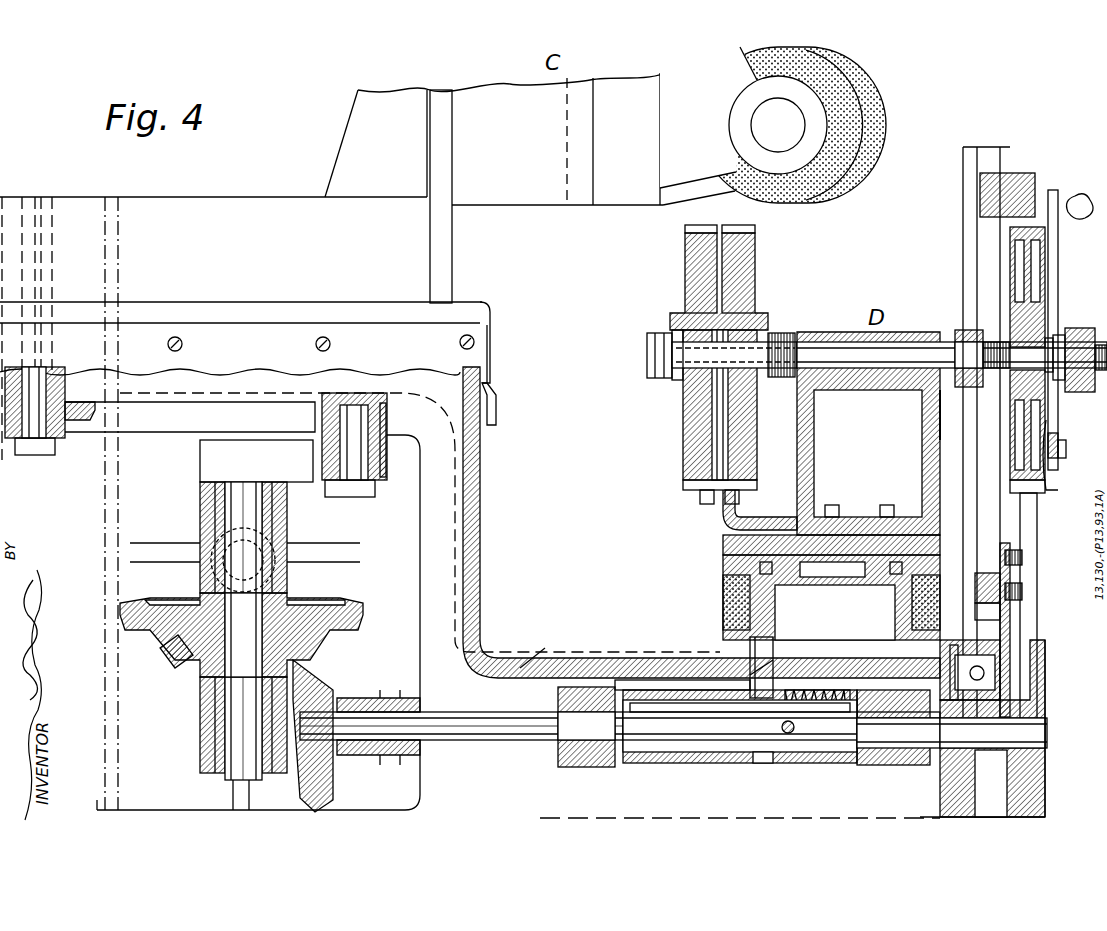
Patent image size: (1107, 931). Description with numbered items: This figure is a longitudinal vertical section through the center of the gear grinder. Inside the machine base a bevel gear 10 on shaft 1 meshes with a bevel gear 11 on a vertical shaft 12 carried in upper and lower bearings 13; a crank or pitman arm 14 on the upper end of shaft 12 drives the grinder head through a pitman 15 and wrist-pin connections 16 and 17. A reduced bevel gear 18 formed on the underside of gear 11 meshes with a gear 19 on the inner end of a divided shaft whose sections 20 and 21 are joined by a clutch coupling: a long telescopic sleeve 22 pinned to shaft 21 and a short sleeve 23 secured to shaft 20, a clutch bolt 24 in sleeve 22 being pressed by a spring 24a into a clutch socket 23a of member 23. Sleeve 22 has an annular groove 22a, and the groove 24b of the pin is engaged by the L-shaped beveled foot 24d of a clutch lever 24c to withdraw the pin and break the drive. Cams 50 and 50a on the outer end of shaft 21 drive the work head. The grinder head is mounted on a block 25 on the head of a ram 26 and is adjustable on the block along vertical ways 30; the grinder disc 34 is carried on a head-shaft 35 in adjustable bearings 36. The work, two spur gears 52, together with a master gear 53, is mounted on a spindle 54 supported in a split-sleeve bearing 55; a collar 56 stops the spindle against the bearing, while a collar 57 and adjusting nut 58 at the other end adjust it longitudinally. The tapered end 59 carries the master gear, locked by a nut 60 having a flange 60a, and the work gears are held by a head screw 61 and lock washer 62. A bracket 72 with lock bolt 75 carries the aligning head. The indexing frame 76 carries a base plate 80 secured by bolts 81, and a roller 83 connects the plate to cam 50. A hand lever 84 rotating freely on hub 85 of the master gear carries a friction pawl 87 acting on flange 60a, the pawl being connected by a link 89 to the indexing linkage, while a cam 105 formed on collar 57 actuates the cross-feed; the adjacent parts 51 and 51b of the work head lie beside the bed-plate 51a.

The shaft 1 is at (200, 578).
The bevel gear 10 is at (200, 535).
The bevel gear 11 is at (170, 640).
The vertical shaft 12 is at (235, 713).
The upper and lower bearings 13 is at (212, 492).
The crank or pitman arm 14 is at (215, 455).
The pitman 15 is at (130, 432).
The pitman wrist-pin connection 16 is at (370, 483).
The pitman wrist-pin connection 17 is at (30, 440).
The reduced bevel gear 18 is at (178, 660).
The gear 19 is at (325, 670).
The shaft section 20 is at (512, 740).
The shaft section 21 is at (900, 755).
The telescopic sleeve 22 is at (698, 763).
The annular groove 22a is at (760, 763).
The short sleeve 23 is at (572, 767).
The clutch socket 23a is at (625, 680).
The clutch bolt 24 is at (690, 712).
The spring 24a is at (815, 715).
The groove 24b is at (800, 690).
The clutch lever 24c is at (762, 650).
The L-shaped beveled foot 24d is at (770, 665).
The mounting block 25 is at (500, 197).
The ram 26 is at (232, 197).
The vertical ways 30 is at (578, 205).
The grinder disc 34 is at (797, 124).
The head-shaft 35 is at (800, 125).
The adjustable bearings 36 is at (805, 94).
The cam 50 is at (960, 780).
The cam 50a is at (1040, 762).
The slide 51 is at (728, 584).
The bed-plate 51a is at (735, 545).
The guide 51b is at (765, 565).
The spur gears 52 is at (690, 262).
The master gear 53 is at (1040, 232).
The arbor or spindle 54 is at (895, 375).
The split-sleeve adjustable bearing 55 is at (827, 332).
The collar 56 is at (782, 333).
The collar 57 is at (960, 330).
The spindle adjusting nut 58 is at (990, 342).
The tapered end 59 is at (1060, 338).
The lock nut 60 is at (1080, 392).
The flange 60a is at (1050, 340).
The head screw 61 is at (650, 350).
The lock washer 62 is at (670, 335).
The bracket 72 is at (725, 508).
The lock bolt 75 is at (700, 470).
The indexing frame 76 is at (683, 410).
The base plate 80 is at (978, 610).
The bolts 81 is at (1022, 592).
The roller 83 is at (962, 655).
The hand lever 84 is at (1055, 255).
The hub 85 is at (1058, 445).
The friction pawl 87 is at (1050, 488).
The link 89 is at (1062, 458).
The cam 105 is at (963, 405).